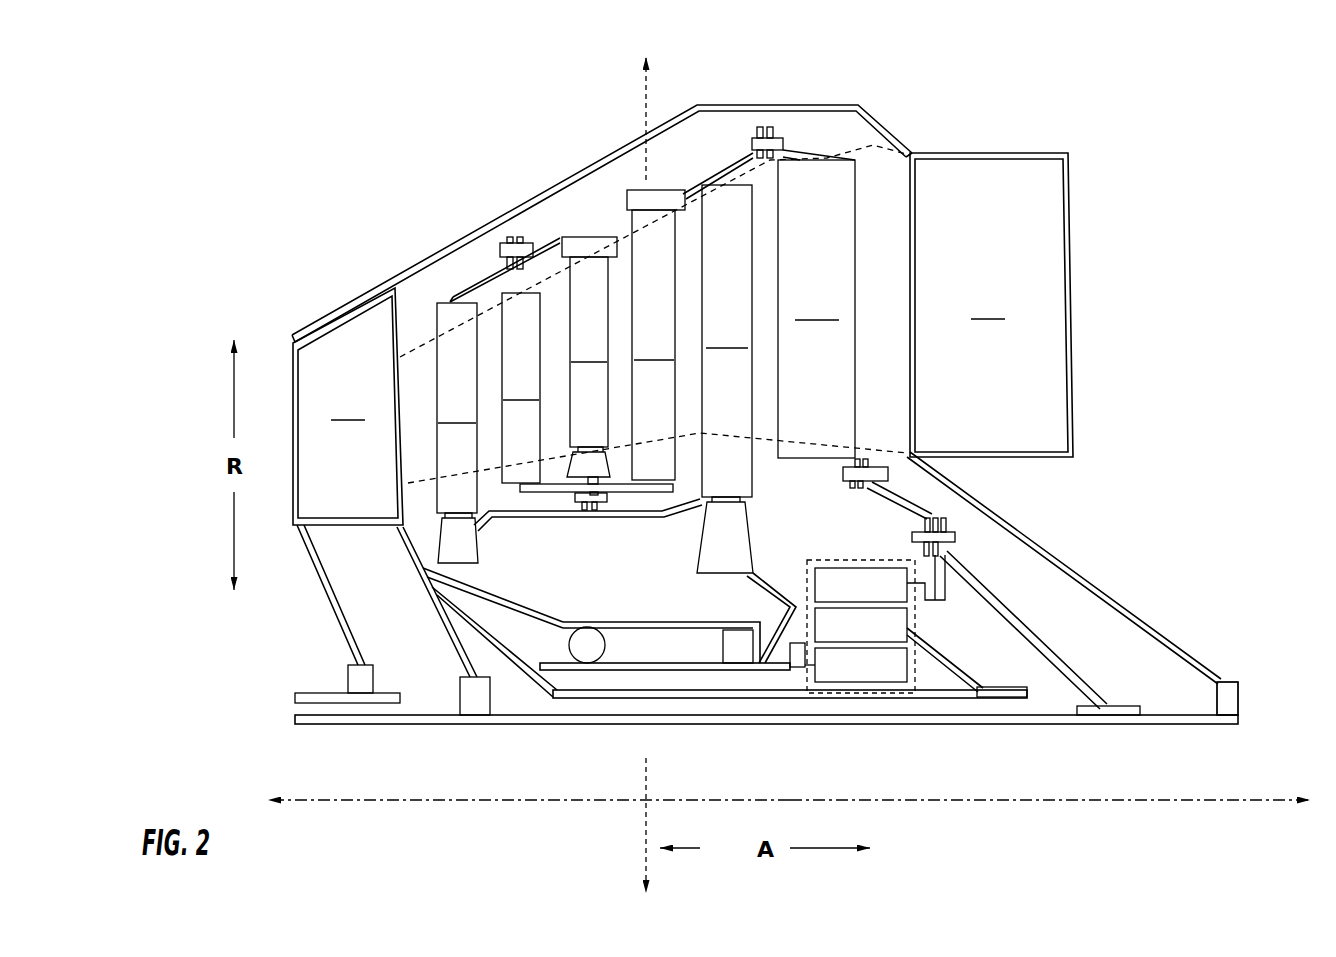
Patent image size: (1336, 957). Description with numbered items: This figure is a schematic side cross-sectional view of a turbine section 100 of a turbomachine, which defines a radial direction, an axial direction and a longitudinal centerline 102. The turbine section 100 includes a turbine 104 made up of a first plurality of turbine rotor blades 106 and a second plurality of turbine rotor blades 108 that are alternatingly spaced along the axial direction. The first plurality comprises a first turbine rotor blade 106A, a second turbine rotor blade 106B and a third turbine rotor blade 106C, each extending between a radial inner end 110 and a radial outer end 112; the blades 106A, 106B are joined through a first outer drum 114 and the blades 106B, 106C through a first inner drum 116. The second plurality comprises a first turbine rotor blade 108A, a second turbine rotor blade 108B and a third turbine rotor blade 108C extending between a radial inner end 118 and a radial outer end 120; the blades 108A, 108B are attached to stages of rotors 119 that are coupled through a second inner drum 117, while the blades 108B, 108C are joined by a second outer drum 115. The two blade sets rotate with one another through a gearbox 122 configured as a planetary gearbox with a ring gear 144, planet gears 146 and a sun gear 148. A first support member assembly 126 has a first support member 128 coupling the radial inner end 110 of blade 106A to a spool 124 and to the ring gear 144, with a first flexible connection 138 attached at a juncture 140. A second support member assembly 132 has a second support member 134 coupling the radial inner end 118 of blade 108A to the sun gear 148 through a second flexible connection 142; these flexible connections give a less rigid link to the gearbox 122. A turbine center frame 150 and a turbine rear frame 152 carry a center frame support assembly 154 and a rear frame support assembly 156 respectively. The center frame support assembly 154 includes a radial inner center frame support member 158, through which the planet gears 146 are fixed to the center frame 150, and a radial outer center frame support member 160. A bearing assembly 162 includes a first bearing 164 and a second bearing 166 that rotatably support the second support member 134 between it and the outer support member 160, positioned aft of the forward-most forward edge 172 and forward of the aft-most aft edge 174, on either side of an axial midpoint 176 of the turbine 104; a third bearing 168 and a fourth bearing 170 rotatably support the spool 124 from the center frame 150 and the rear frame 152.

The turbine section 100 is at (1139, 122).
The longitudinal centerline 102 is at (1168, 803).
The turbine 104 is at (585, 183).
The first plurality of turbine rotor blades 106 is at (864, 188).
The first turbine rotor blade 106A is at (816, 309).
The second turbine rotor blade 106B is at (656, 335).
The third turbine rotor blade 106C is at (521, 388).
The second plurality of turbine rotor blades 108 is at (762, 188).
The first turbine rotor blade 108A is at (727, 341).
The second turbine rotor blade 108B is at (457, 408).
The third turbine rotor blade 108C is at (589, 357).
The radial inner end 110 is at (512, 492).
The radial outer end 112 is at (510, 286).
The first outer drum 114 is at (708, 172).
The second outer drum 115 is at (543, 248).
The first inner drum 116 is at (620, 487).
The second inner drum 117 is at (560, 520).
The radial inner end 118 is at (757, 500).
The rotors 119 is at (454, 542).
The radial outer end 120 is at (738, 182).
The gearbox 122 is at (935, 517).
The spool 124 is at (740, 725).
The first support member assembly 126 is at (1005, 556).
The first support member 128 is at (880, 500).
The second support member assembly 132 is at (782, 566).
The second support member 134 is at (680, 670).
The first flexible connection 138 is at (960, 521).
The juncture 140 is at (879, 556).
The second flexible connection 142 is at (790, 672).
The ring gear 144 is at (828, 584).
The planet gear 146 is at (888, 618).
The sun gear 148 is at (893, 670).
The turbine center frame 150 is at (348, 406).
The turbine rear frame 152 is at (991, 305).
The center frame support assembly 154 is at (436, 628).
The rear frame support assembly 156 is at (1137, 614).
The radial inner center frame support member 158 is at (595, 698).
The radial outer center frame support member 160 is at (657, 624).
The bearing assembly 162 is at (536, 643).
The first bearing 164 is at (562, 650).
The second bearing 166 is at (735, 657).
The third bearing 168 is at (477, 697).
The fourth bearing 170 is at (1233, 700).
The forward-most forward edge 172 is at (428, 460).
The aft-most aft edge 174 is at (866, 342).
The midpoint 176 is at (655, 85).